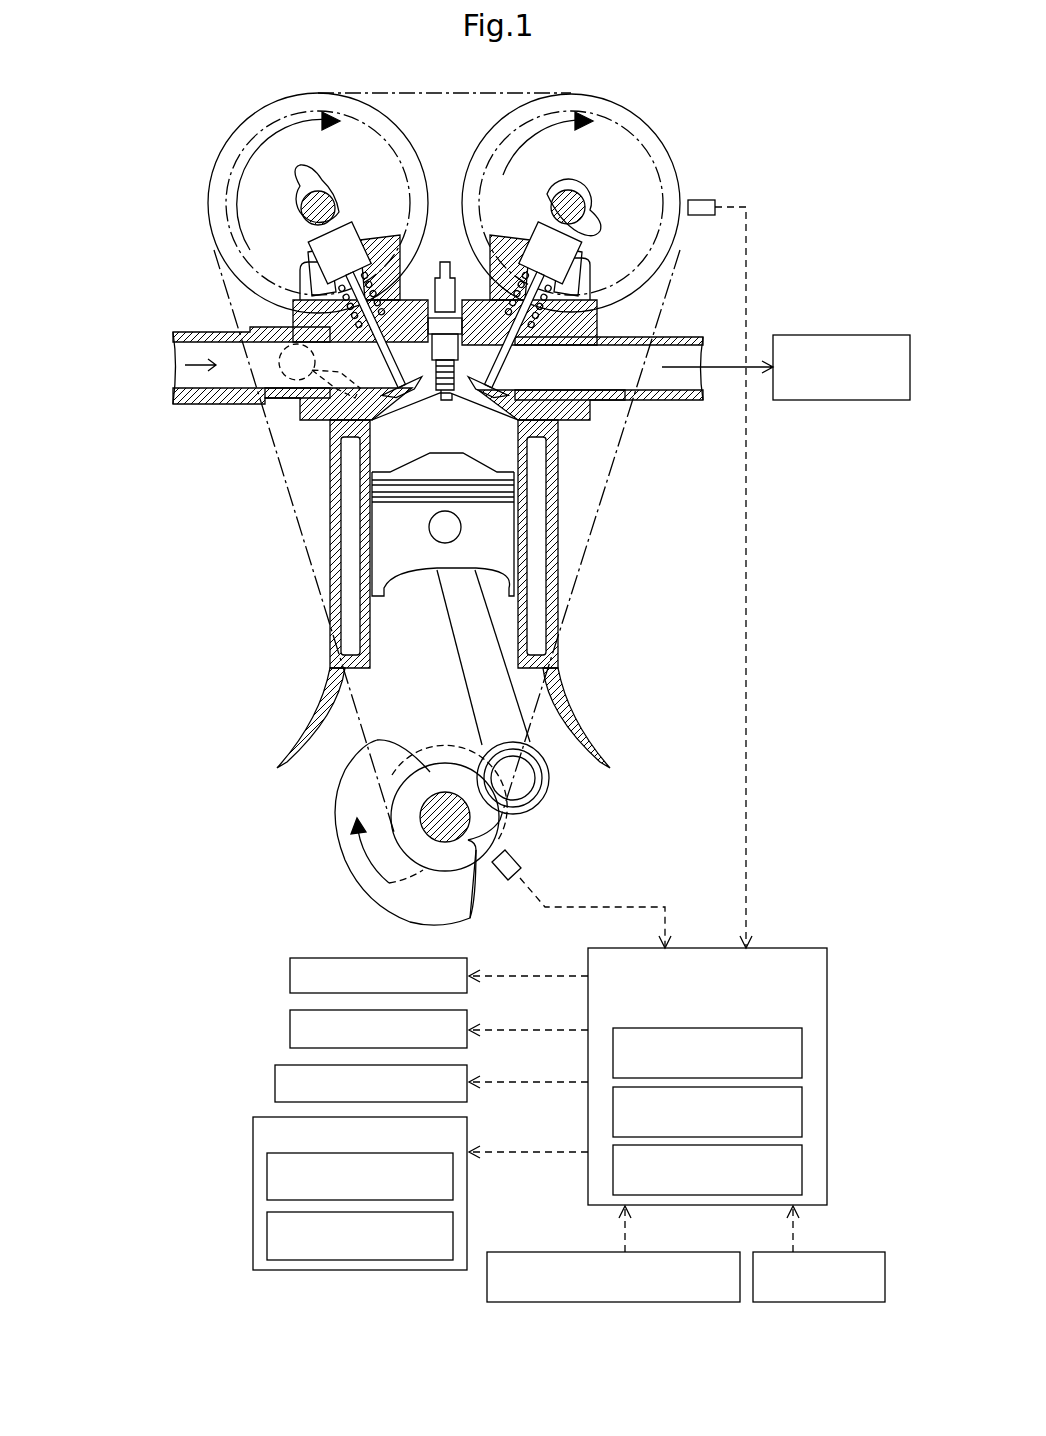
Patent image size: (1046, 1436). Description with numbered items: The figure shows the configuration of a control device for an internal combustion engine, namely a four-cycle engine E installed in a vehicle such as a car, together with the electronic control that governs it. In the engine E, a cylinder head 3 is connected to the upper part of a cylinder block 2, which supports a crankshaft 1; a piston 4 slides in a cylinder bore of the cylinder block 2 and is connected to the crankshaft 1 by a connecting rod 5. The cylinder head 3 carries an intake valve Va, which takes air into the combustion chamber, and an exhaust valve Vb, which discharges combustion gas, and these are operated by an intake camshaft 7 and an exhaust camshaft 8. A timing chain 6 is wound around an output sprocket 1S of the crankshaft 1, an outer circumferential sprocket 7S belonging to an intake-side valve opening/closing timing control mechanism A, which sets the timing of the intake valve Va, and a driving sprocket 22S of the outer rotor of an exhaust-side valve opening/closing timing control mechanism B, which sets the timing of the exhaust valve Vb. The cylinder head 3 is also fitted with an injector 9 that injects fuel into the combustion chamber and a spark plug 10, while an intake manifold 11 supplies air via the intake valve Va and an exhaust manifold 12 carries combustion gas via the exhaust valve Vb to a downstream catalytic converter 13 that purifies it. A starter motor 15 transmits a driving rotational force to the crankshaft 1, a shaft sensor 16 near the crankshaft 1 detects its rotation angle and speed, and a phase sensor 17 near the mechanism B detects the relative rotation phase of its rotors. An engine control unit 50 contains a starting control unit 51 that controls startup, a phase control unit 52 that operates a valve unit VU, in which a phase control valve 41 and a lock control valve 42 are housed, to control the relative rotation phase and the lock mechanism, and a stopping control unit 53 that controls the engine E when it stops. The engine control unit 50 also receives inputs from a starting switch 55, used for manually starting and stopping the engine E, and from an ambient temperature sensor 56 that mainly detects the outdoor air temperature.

The crankshaft 1 is at (445, 795).
The output sprocket 1S is at (392, 898).
The cylinder block 2 is at (556, 564).
The cylinder head 3 is at (560, 410).
The piston 4 is at (506, 518).
The connecting rod 5 is at (456, 620).
The timing chain 6 is at (292, 523).
The intake camshaft 7 is at (300, 207).
The outer circumferential sprocket 7S is at (250, 122).
The exhaust camshaft 8 is at (583, 198).
The driving sprocket 22S is at (612, 103).
The injector 9 is at (322, 402).
The spark plug 10 is at (447, 262).
The intake manifold 11 is at (220, 332).
The exhaust manifold 12 is at (666, 337).
The catalytic converter 13 is at (842, 335).
The starter motor 15 is at (275, 1085).
The shaft sensor 16 is at (518, 858).
The phase sensor 17 is at (708, 200).
The intake-side valve opening/closing timing control mechanism A is at (230, 182).
The exhaust-side valve opening/closing timing control mechanism B is at (636, 126).
The engine E is at (228, 468).
The intake valve Va is at (412, 404).
The exhaust valve Vb is at (502, 395).
The valve unit VU is at (253, 1138).
The phase control valve 41 is at (267, 1178).
The lock control valve 42 is at (267, 1236).
The engine control unit 50 is at (827, 996).
The starting control unit 51 is at (802, 1053).
The phase control unit 52 is at (802, 1110).
The stopping control unit 53 is at (802, 1167).
The starting switch 55 is at (840, 1252).
The ambient temperature sensor 56 is at (566, 1252).